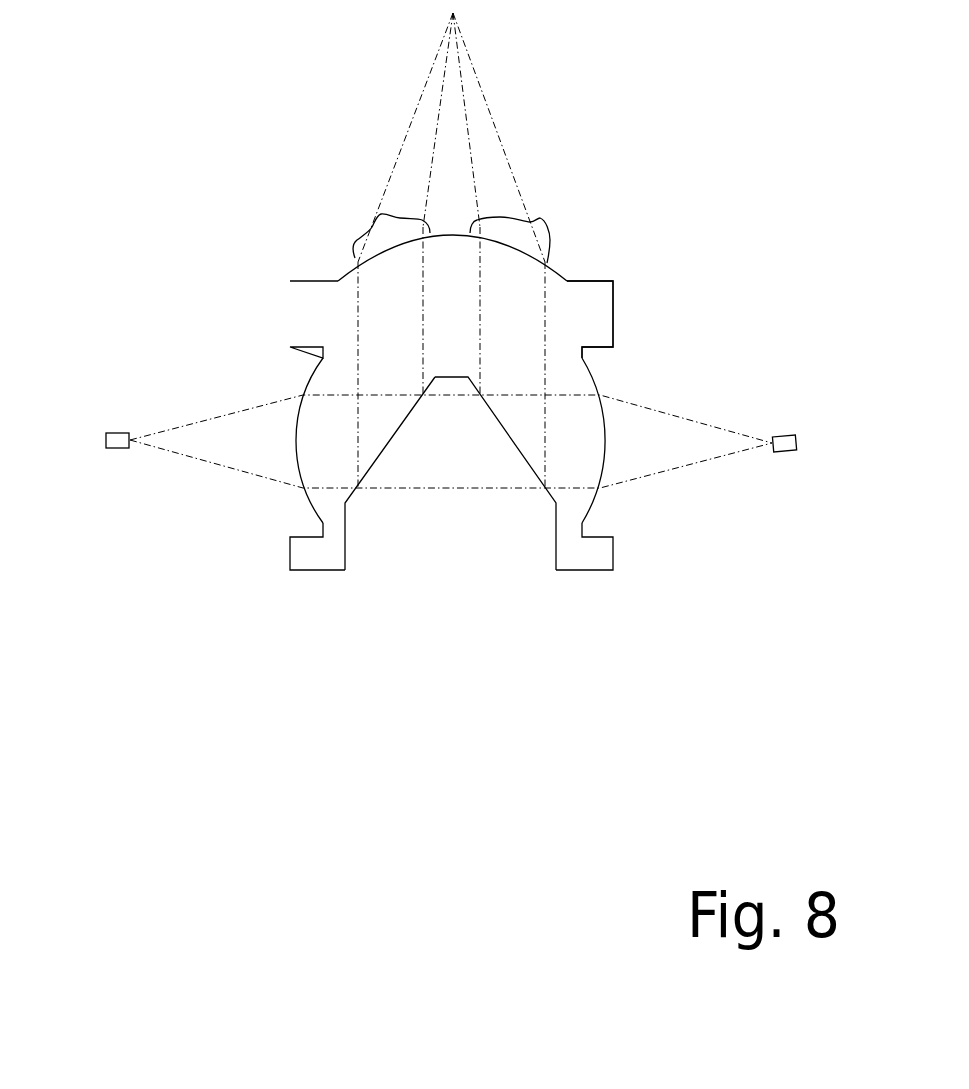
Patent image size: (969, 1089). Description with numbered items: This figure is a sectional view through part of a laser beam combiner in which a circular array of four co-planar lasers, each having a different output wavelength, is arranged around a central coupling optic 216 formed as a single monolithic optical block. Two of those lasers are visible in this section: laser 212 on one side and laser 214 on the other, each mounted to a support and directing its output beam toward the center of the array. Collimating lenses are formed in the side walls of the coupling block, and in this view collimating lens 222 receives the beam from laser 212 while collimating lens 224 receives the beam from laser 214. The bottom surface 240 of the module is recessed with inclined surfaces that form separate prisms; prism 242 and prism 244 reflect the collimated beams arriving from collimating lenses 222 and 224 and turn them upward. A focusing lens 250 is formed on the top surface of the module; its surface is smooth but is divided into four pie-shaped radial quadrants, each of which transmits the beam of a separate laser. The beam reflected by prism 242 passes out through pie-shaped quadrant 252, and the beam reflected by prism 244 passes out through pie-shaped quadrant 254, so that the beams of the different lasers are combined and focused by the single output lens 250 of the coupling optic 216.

The laser 212 is at (781, 435).
The laser 214 is at (110, 433).
The coupling optic 216 is at (588, 307).
The collimating lens 222 is at (605, 438).
The collimating lens 224 is at (297, 430).
The bottom surface 240 is at (510, 555).
The prism 242 is at (495, 420).
The prism 244 is at (367, 476).
The focusing lens 250 is at (460, 217).
The pie-shaped quadrant 252 is at (540, 217).
The pie-shaped quadrant 254 is at (381, 216).